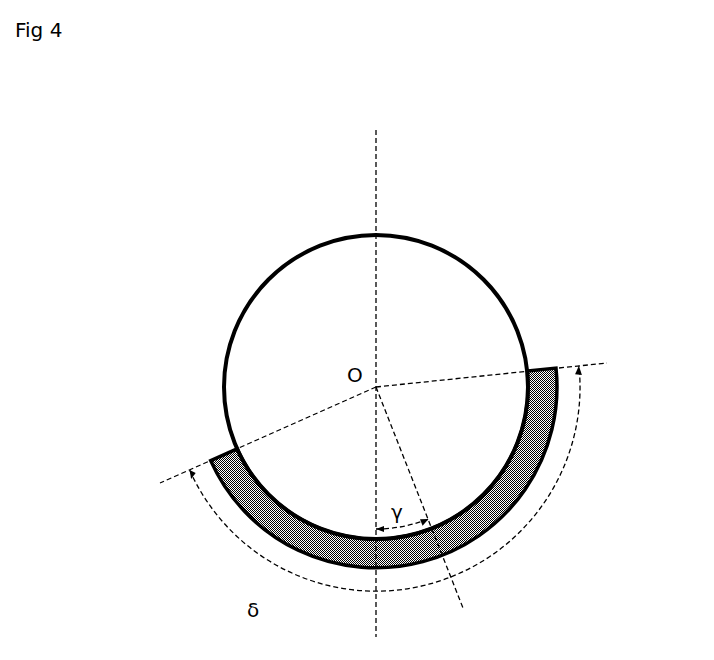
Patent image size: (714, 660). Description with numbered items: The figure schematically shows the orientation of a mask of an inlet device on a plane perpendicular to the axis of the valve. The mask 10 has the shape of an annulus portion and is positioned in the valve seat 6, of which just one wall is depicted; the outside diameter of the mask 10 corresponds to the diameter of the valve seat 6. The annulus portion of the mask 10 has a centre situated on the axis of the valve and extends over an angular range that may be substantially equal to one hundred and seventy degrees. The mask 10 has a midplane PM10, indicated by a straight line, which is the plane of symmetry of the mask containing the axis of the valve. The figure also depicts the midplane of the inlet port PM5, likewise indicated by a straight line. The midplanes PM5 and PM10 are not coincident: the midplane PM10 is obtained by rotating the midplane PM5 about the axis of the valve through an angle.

The valve seat 6 is at (233, 322).
The mask 10 is at (513, 507).
The midplane of the inlet port PM5 is at (375, 187).
The midplane of the mask PM10 is at (410, 456).